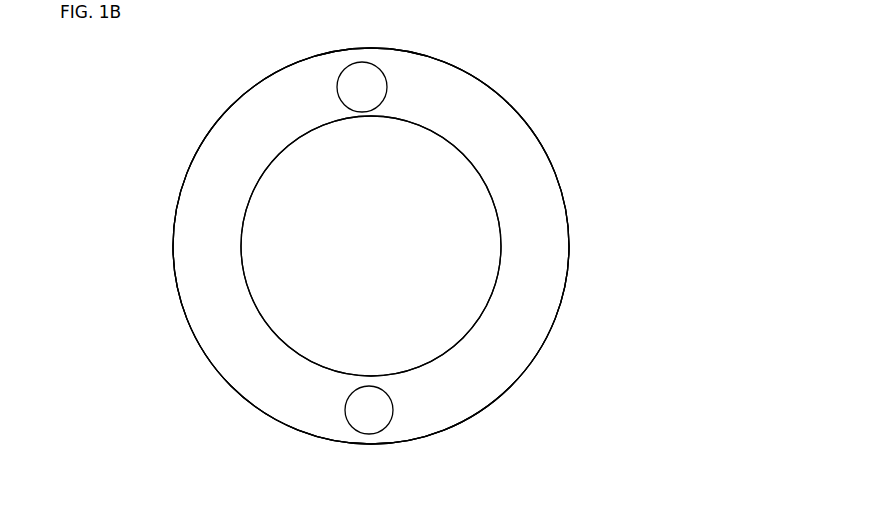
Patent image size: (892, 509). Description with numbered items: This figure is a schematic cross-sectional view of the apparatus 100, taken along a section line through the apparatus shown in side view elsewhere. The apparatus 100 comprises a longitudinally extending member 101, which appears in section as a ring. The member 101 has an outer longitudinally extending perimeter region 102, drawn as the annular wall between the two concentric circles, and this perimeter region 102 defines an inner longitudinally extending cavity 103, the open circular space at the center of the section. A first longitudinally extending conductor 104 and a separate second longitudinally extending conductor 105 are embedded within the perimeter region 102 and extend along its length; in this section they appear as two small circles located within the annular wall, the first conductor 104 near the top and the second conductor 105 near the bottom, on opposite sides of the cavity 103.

The apparatus 100 is at (664, 108).
The longitudinally extending member 101 is at (202, 143).
The outer longitudinally extending perimeter region 102 is at (541, 258).
The inner longitudinally extending cavity 103 is at (438, 213).
The first longitudinally extending conductor 104 is at (364, 80).
The second longitudinally extending conductor 105 is at (377, 411).